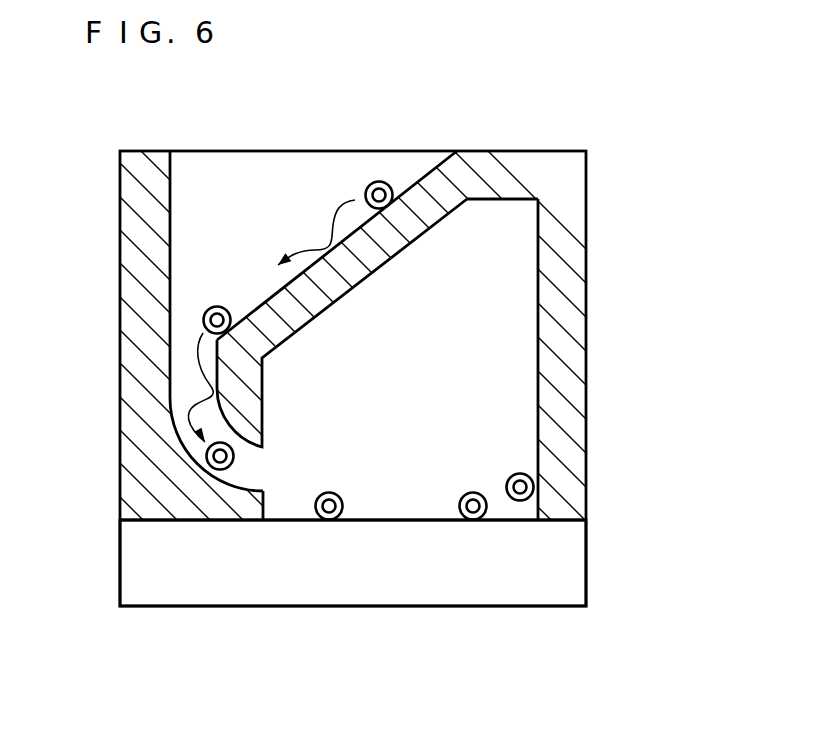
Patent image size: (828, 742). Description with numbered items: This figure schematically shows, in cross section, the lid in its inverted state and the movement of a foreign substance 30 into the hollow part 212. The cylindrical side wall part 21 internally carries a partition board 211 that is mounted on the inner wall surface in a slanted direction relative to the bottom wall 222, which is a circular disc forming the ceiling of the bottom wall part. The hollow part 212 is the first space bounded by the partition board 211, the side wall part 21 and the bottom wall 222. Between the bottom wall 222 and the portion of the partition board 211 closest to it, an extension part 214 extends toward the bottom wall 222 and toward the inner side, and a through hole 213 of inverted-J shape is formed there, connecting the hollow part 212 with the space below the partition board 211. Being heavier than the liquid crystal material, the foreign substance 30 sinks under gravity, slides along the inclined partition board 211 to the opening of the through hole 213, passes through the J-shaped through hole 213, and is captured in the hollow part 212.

The side wall part 21 is at (600, 262).
The partition board 211 is at (415, 202).
The hollow part 212 is at (503, 354).
The through hole 213 is at (183, 398).
The extension part 214 is at (242, 503).
The bottom wall 222 is at (392, 575).
The foreign substance 30 is at (380, 182).